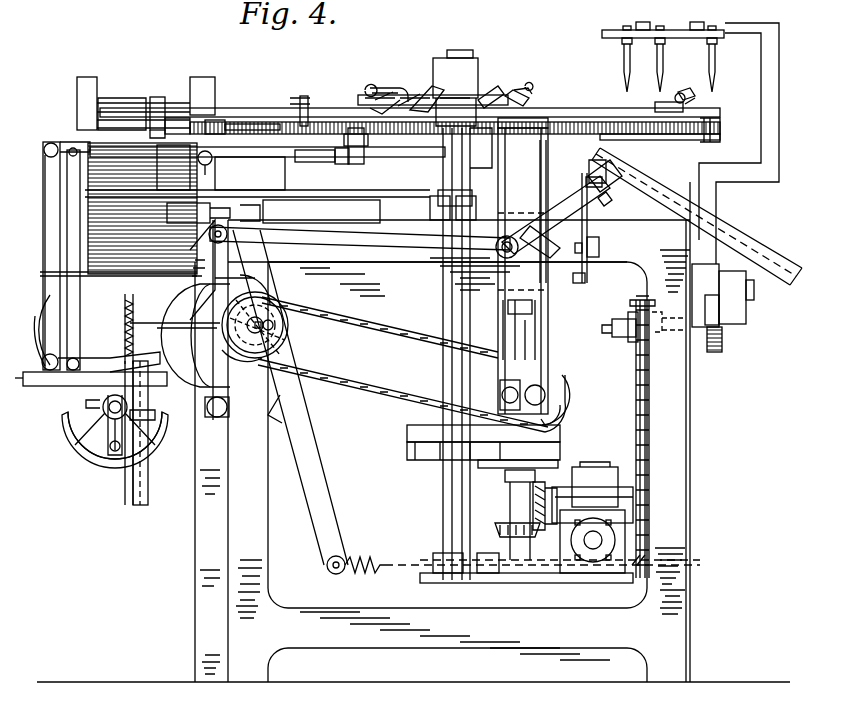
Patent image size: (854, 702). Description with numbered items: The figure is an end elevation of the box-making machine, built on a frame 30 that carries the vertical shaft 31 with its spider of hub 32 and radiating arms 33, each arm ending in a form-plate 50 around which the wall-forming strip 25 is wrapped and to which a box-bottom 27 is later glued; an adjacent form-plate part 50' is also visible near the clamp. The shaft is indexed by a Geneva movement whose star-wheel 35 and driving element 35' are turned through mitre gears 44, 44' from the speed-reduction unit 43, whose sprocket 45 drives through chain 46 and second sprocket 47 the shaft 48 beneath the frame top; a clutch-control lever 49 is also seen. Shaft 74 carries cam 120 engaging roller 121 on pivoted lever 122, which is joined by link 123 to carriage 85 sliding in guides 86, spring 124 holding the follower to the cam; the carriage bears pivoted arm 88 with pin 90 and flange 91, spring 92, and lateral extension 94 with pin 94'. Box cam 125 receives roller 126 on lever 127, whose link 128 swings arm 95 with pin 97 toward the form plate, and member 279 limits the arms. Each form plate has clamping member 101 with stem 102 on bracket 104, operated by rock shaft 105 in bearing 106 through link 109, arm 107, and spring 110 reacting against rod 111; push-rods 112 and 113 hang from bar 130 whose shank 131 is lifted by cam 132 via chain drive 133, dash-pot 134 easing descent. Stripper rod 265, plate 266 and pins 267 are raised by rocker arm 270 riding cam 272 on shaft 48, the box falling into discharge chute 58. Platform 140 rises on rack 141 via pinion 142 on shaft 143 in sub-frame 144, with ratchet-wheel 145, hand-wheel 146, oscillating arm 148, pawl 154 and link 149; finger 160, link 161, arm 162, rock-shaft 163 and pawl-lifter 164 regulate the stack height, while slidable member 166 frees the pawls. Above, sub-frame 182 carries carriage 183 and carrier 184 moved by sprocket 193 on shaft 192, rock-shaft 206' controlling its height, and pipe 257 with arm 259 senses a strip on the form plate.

The frame 30 is at (700, 607).
The rod 265 is at (712, 200).
The plate 266 is at (622, 30).
The pins 267 is at (716, 80).
The radiating arms 33 is at (595, 115).
The form-plate 50 is at (455, 125).
The box-bottom 27 is at (686, 140).
The wall-forming strip 25 is at (722, 130).
The bracket 104 is at (670, 102).
The stem 102 is at (698, 108).
The flange 91 is at (378, 158).
The carriage 85 is at (257, 171).
The arm 88 is at (268, 152).
The spring 92 is at (212, 172).
The guides 86 is at (308, 198).
The lateral extension 94 is at (315, 168).
The pin 94' is at (338, 167).
The pin 90 is at (354, 128).
The clamping member 101 is at (306, 96).
The rock shaft 105 is at (335, 95).
The rod 111 is at (384, 86).
The hub 32 is at (418, 100).
The bearing 106 is at (424, 96).
The spring 110 is at (438, 58).
The arm 50' is at (497, 81).
The link 109 is at (522, 90).
The arm 107 is at (503, 128).
The push-rod 112 is at (505, 172).
The vertical shaft 31 is at (444, 292).
The star-wheel 35 is at (542, 504).
The driving element 35' is at (498, 450).
The mitre gear 44 is at (516, 515).
The mitre gear 44' is at (509, 521).
The speed-reduction unit 43 is at (604, 475).
The sprocket 45 is at (622, 553).
The chain 46 is at (638, 404).
The second sprocket 47 is at (634, 300).
The shaft 48 is at (624, 338).
The rocker arm 270 is at (744, 298).
The cam 272 is at (722, 350).
The link 128 is at (350, 230).
The clutch-control lever 49 is at (540, 222).
The bar 130 is at (532, 222).
The push-rod 113 is at (547, 160).
The swinging arm 95 is at (608, 222).
The discharge chute 58 is at (760, 250).
The pin 97 is at (598, 166).
The member 279 is at (424, 160).
The shank 131 is at (548, 298).
The dash-pot mechanism 134 is at (508, 360).
The cam 132 is at (580, 395).
The chain drive 133 is at (406, 396).
The cam-following roller 121 is at (290, 306).
The cam 120 is at (165, 336).
The roller 126 is at (157, 320).
The lever 127 is at (280, 282).
The box cam 125 is at (292, 360).
The link 123 is at (190, 238).
The pivoted lever 122 is at (330, 470).
The spring 124 is at (375, 560).
The shaft 74 is at (205, 405).
The carriage 183 is at (80, 77).
The sub-frame 182 is at (88, 105).
The shaft 192 is at (165, 98).
The carrier 184 is at (145, 112).
The sprocket 193 is at (165, 100).
The pipe 257 is at (215, 120).
The arm 259 is at (232, 122).
The finger 160 is at (64, 142).
The link 161 is at (70, 210).
The rock-shaft 206' is at (140, 219).
The platform 140 is at (43, 272).
The arm 162 is at (50, 297).
The rock-shaft 163 is at (31, 334).
The slidable member 166 is at (40, 386).
The pawl-lifter 164 is at (60, 380).
The sub-frame 144 is at (90, 420).
The pinion 142 is at (100, 420).
The shaft 143 is at (105, 448).
The hand-wheel 146 is at (98, 455).
The oscillating arm 148 is at (100, 470).
The pawl 154 is at (124, 480).
The rack 141 is at (137, 505).
The link 149 is at (148, 425).
The ratchet-wheel 145 is at (150, 445).